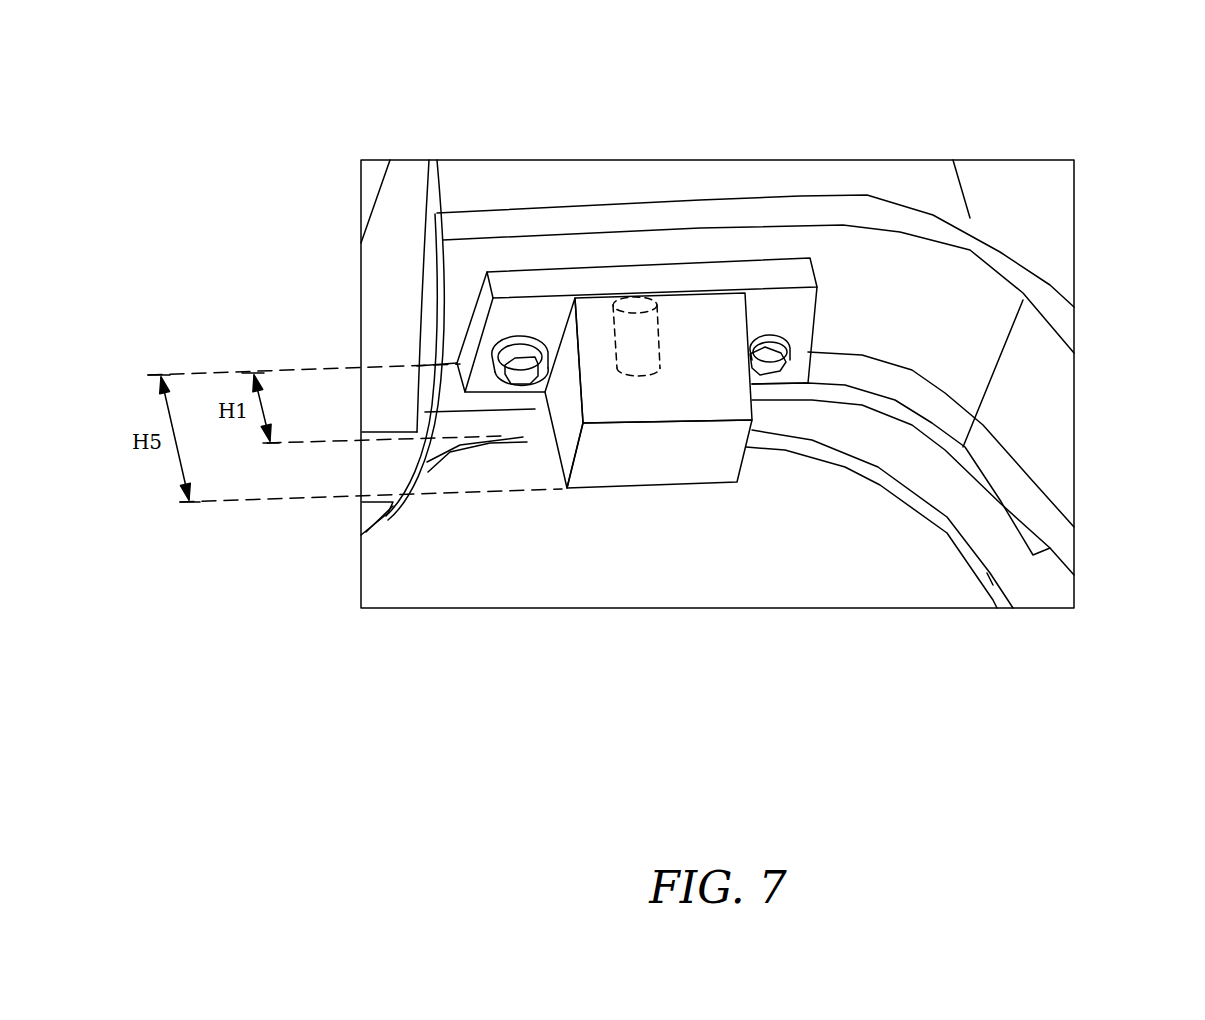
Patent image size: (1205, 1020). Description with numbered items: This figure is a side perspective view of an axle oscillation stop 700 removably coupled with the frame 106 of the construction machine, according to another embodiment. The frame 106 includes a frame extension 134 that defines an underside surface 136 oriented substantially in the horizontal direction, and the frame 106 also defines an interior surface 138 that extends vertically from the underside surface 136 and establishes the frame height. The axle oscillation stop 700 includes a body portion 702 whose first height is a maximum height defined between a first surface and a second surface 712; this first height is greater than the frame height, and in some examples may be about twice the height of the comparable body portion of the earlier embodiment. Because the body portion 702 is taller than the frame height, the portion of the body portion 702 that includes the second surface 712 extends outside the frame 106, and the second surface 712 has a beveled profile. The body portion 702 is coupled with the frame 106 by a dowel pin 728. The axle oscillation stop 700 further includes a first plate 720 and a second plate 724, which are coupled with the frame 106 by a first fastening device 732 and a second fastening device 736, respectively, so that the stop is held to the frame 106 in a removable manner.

The frame 106 is at (1097, 186).
The frame extension 134 is at (715, 217).
The underside surface 136 is at (764, 238).
The interior surface 138 is at (925, 467).
The axle oscillation stop 700 is at (620, 515).
The body portion 702 is at (648, 483).
The second surface 712 is at (663, 462).
The first plate 720 is at (785, 312).
The second plate 724 is at (503, 317).
The dowel pin 728 is at (637, 310).
The first fastening device 732 is at (768, 365).
The second fastening device 736 is at (527, 378).